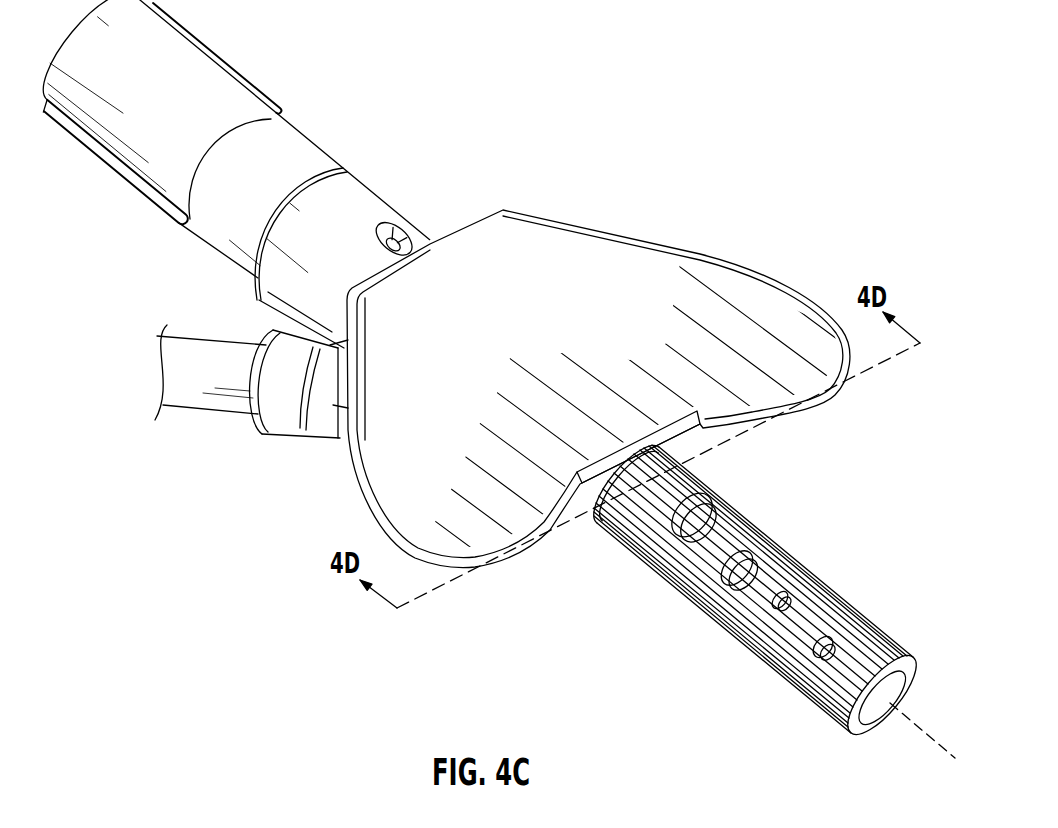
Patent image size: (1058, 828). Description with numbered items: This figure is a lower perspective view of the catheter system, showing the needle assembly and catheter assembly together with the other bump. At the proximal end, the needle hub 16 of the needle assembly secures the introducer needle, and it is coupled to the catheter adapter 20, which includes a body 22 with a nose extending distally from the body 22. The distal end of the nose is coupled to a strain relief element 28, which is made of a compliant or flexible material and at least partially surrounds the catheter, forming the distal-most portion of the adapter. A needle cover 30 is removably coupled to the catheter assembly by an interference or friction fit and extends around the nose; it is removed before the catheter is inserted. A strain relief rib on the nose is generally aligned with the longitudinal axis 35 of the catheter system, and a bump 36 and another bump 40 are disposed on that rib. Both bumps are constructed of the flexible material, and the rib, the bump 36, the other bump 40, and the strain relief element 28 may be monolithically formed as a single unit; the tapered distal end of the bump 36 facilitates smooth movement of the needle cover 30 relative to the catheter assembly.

The needle hub 16 is at (306, 136).
The catheter adapter 20 is at (363, 199).
The body 22 is at (592, 503).
The strain relief element 28 is at (723, 514).
The needle cover 30 is at (853, 604).
The longitudinal axis 35 is at (937, 738).
The bump 36 is at (704, 487).
The other bump 40 is at (650, 447).